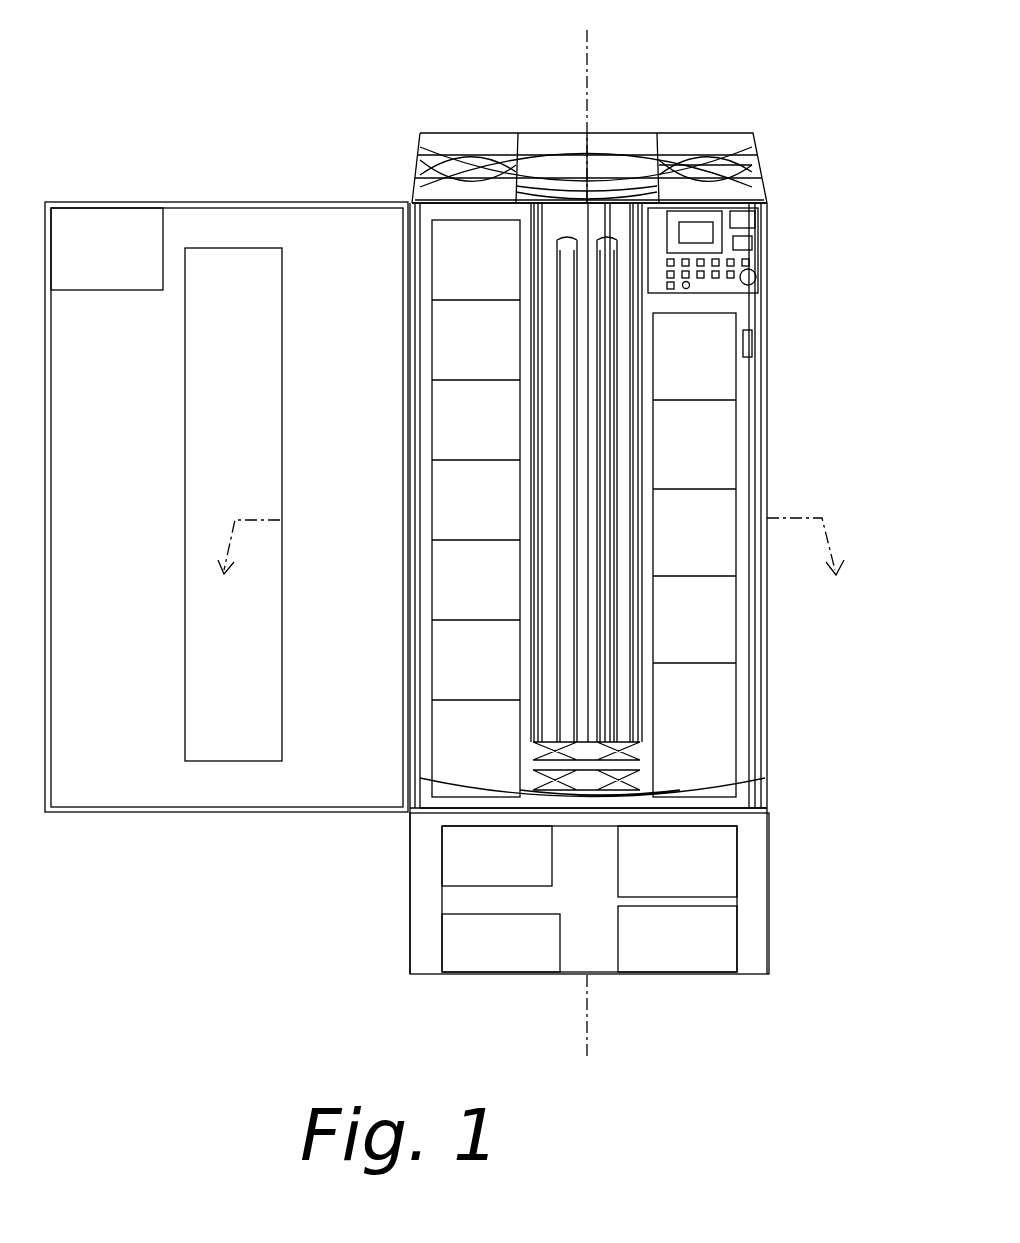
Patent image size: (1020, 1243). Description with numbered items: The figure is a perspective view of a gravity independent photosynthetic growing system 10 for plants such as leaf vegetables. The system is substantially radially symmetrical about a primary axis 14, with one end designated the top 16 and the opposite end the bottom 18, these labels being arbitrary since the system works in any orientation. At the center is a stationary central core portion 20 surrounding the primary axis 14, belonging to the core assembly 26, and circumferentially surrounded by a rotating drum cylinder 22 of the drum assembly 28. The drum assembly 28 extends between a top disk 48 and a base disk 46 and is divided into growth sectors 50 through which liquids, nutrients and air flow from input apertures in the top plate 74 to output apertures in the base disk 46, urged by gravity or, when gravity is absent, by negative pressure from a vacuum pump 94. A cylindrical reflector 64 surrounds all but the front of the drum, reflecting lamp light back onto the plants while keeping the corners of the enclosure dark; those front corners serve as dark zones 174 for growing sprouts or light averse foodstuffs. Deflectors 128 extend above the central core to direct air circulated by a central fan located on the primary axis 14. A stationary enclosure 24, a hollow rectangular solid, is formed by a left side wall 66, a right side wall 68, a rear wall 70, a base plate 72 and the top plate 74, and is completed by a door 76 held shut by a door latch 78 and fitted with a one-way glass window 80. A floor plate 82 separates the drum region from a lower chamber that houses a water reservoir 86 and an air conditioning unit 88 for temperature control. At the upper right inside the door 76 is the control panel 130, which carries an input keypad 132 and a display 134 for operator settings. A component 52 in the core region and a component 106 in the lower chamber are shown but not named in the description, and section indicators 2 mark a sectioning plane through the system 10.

The section line 2 is at (522, 564).
The photosynthetic growing system 10 is at (469, 535).
The primary axis 14 is at (590, 40).
The top 16 is at (565, 135).
The bottom 18 is at (497, 893).
The central core portion 20 is at (560, 368).
The rotating drum cylinder 22 is at (476, 508).
The stationary enclosure 24 is at (765, 665).
The core assembly 26 is at (560, 292).
The drum assembly 28 is at (625, 510).
The base disk 46 is at (602, 785).
The top disk 48 is at (703, 147).
The growth sectors 50 is at (580, 780).
The center post 52 is at (588, 600).
The cylindrical reflector 64 is at (718, 636).
The left side wall 66 is at (420, 195).
The right side wall 68 is at (760, 155).
The rear wall 70 is at (455, 140).
The base plate 72 is at (737, 973).
The top plate 74 is at (495, 237).
The door 76 is at (226, 542).
The door latch 78 is at (750, 343).
The window 80 is at (262, 340).
The floor plate 82 is at (760, 790).
The water reservoir 86 is at (680, 958).
The air conditioning unit 88 is at (522, 958).
The vacuum pump 94 is at (525, 876).
The reservoir 106 is at (700, 878).
The deflectors 128 is at (622, 165).
The control panel 130 is at (758, 245).
The input keypad 132 is at (705, 272).
The display 134 is at (700, 232).
The dark zones 174 is at (500, 780).